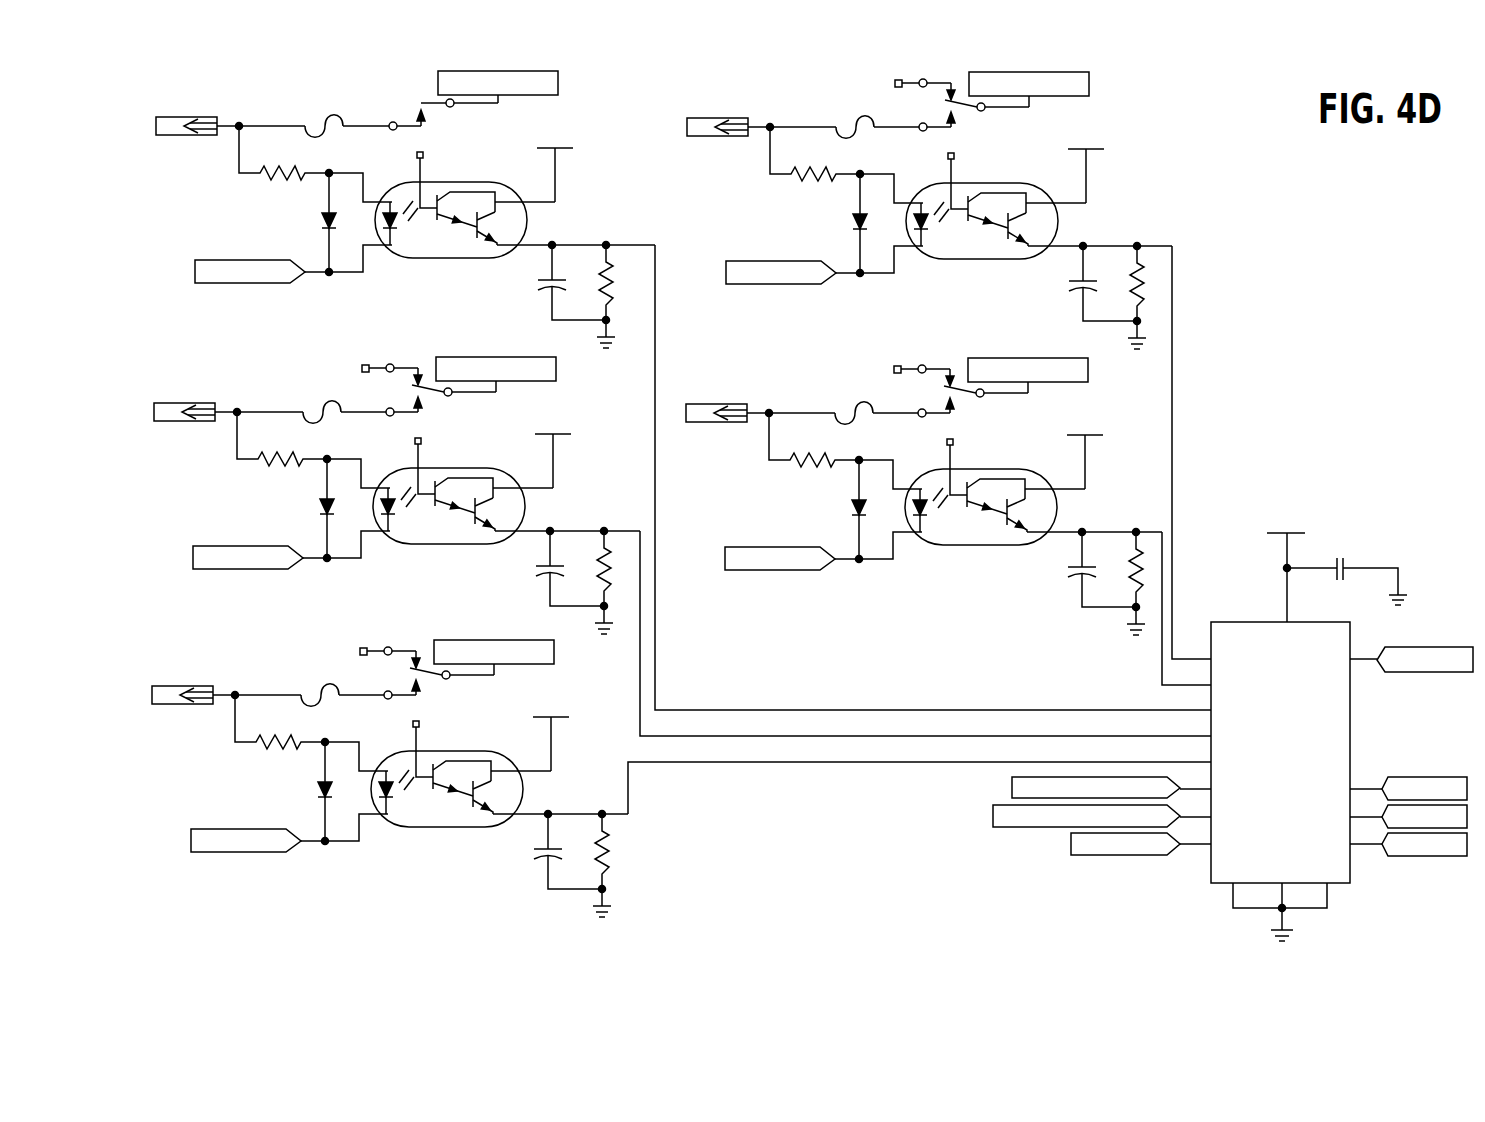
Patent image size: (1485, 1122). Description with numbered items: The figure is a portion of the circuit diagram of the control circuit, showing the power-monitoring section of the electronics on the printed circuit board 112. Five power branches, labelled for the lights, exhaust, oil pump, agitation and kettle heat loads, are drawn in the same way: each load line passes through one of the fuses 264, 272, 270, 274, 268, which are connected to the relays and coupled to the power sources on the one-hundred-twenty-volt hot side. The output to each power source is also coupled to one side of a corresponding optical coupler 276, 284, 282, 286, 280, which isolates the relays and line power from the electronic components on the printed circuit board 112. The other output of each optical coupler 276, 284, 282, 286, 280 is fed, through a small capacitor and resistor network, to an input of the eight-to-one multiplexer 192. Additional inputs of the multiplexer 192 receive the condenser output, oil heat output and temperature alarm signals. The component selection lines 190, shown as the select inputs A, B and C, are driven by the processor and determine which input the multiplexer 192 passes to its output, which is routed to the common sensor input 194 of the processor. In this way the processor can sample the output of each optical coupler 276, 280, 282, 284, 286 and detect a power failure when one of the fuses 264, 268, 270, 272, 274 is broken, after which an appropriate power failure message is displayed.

The printed circuit board 112 is at (1284, 262).
The component selection lines 190 is at (1468, 815).
The 8:1 multiplexer 192 is at (1343, 703).
The common sensor input 194 is at (1427, 647).
The fuse 264 is at (330, 114).
The fuse 268 is at (853, 388).
The fuse 270 is at (319, 670).
The fuse 272 is at (321, 387).
The fuse 274 is at (854, 102).
The optical coupler 276 is at (428, 258).
The optical coupler 280 is at (995, 522).
The optical coupler 282 is at (461, 804).
The optical coupler 284 is at (463, 521).
The optical coupler 286 is at (996, 236).